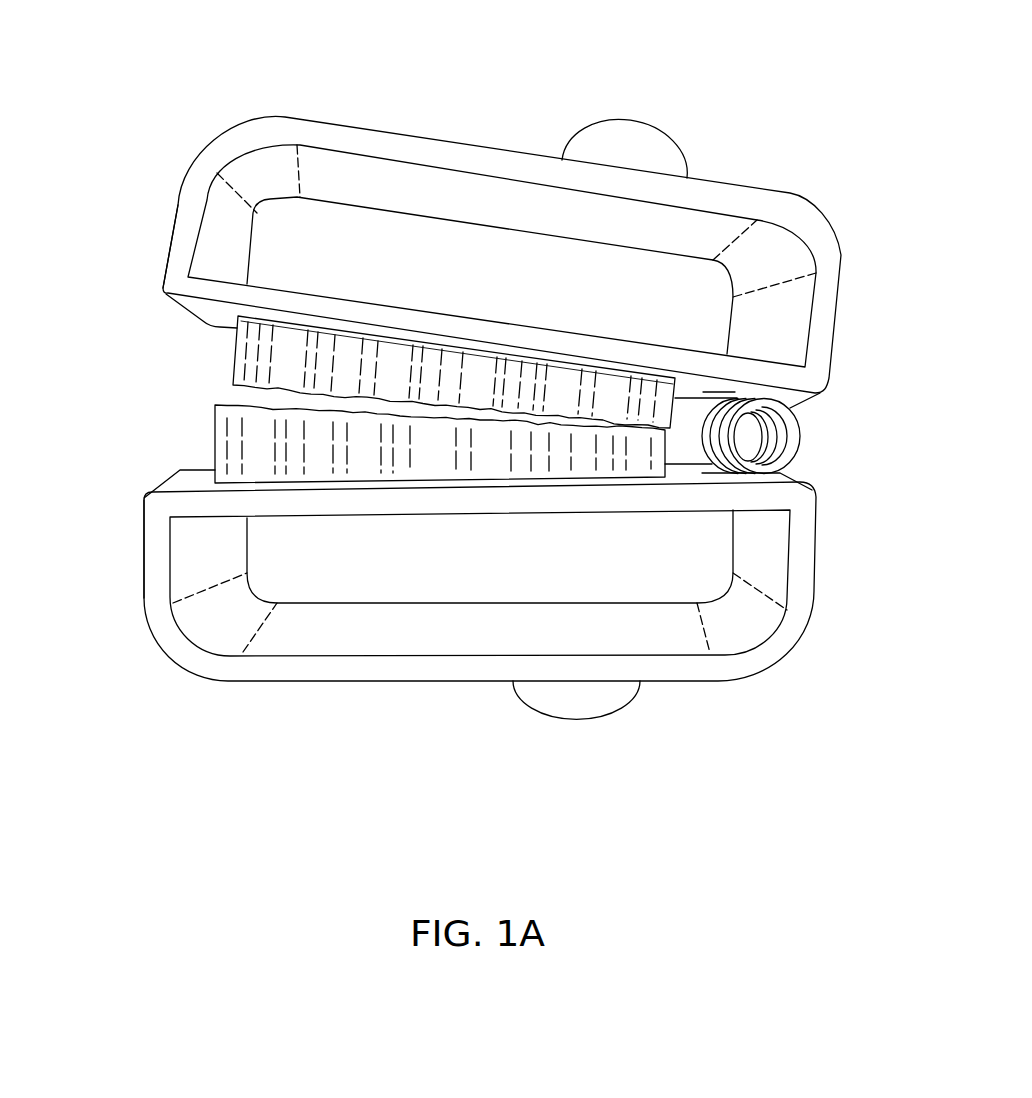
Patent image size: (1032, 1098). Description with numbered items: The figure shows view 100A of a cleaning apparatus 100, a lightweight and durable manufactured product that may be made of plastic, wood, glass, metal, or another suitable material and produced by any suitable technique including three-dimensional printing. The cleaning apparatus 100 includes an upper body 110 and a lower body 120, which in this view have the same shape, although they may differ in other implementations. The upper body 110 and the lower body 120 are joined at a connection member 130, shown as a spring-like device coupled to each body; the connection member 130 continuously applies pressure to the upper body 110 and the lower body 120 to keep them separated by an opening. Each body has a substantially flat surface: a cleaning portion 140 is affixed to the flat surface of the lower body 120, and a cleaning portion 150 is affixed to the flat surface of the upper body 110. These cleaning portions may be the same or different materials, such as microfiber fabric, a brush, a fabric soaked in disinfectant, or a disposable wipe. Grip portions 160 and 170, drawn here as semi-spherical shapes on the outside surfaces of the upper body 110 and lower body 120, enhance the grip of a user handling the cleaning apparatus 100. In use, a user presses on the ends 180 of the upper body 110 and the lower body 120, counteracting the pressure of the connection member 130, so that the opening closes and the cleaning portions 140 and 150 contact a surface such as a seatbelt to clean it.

The cleaning apparatus 100 is at (297, 48).
The view 100A is at (547, 34).
The upper body 110 is at (433, 183).
The lower body 120 is at (217, 667).
The connection member 130 is at (800, 444).
The cleaning portion 140 is at (230, 434).
The cleaning portion 150 is at (270, 351).
The grip portion 160 is at (657, 151).
The grip portion 170 is at (572, 692).
The end 180 is at (187, 206).